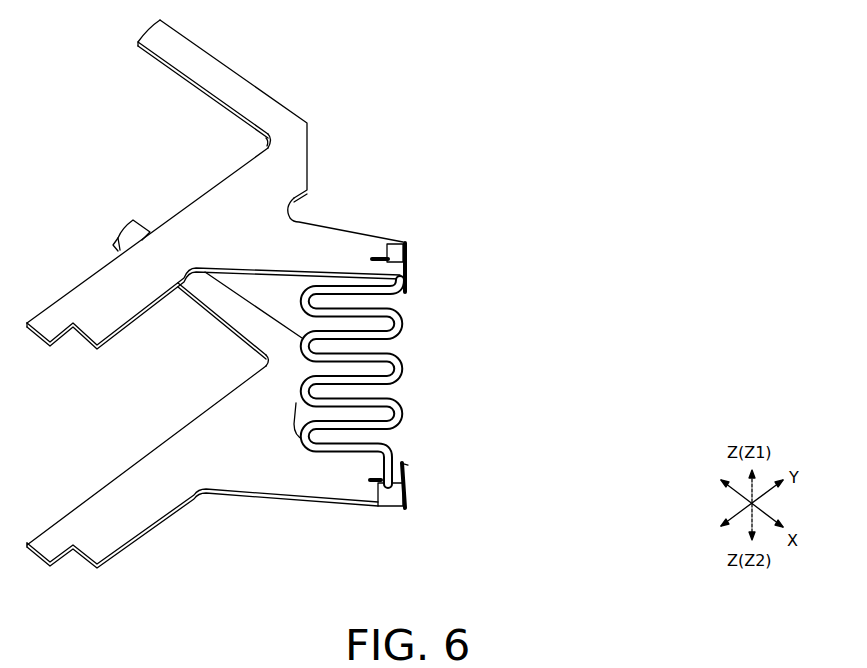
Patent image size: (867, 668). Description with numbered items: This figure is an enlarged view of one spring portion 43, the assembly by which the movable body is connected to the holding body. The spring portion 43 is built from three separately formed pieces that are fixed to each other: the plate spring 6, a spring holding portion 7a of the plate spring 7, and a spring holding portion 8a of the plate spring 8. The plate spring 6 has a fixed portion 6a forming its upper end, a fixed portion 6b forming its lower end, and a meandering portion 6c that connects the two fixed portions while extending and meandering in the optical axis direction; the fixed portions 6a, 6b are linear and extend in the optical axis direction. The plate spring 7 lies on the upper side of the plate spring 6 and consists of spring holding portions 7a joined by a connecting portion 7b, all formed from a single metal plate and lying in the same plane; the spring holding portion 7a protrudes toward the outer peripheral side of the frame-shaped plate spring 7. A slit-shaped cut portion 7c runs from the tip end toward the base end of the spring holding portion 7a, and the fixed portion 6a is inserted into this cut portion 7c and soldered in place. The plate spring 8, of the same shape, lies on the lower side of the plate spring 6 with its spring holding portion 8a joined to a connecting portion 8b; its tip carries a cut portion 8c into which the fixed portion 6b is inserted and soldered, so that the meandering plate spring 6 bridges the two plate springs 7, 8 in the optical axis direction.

The spring portion 43 is at (303, 294).
The plate spring 7 is at (215, 182).
The spring holding portion 7a is at (330, 226).
The connecting portion 7b is at (225, 65).
The cut portion 7c is at (378, 257).
The plate spring 8 is at (215, 423).
The spring holding portion 8a is at (272, 505).
The connecting portion 8b is at (98, 492).
The cut portion 8c is at (376, 484).
The plate spring 6 is at (392, 340).
The fixed portion 6a is at (404, 243).
The fixed portion 6b is at (407, 499).
The meandering portion 6c is at (403, 372).